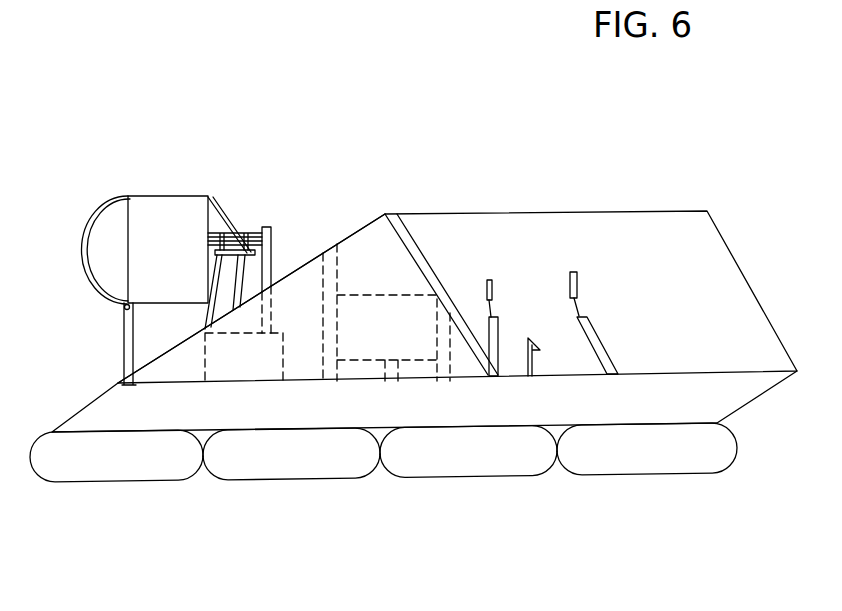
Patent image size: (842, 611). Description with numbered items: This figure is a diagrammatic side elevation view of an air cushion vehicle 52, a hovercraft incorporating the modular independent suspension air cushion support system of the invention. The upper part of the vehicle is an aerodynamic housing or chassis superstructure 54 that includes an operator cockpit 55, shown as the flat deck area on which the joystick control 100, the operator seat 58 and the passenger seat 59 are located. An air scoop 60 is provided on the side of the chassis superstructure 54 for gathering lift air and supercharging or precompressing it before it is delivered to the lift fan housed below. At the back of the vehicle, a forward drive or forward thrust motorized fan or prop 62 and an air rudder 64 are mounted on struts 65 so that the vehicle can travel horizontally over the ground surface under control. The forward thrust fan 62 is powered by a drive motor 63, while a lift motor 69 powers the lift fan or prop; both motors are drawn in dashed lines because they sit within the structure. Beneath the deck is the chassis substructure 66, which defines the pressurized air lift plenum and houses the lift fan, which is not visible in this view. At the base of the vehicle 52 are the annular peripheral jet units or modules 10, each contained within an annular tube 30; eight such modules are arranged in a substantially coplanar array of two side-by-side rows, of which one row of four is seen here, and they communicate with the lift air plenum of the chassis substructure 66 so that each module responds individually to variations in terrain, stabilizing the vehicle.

The annular peripheral jet module 10 is at (112, 497).
The annular tube 30 is at (173, 482).
The air cushion vehicle 52 is at (660, 178).
The chassis superstructure 54 is at (334, 208).
The operator cockpit 55 is at (675, 287).
The operator seat 58 is at (497, 317).
The passenger seat 59 is at (597, 333).
The air scoop 60 is at (415, 243).
The forward thrust fan 62 is at (156, 196).
The drive motor 63 is at (247, 376).
The air rudder 64 is at (97, 212).
The strut 65 is at (126, 325).
The chassis substructure 66 is at (750, 402).
The lift motor 69 is at (397, 343).
The joystick control 100 is at (535, 353).